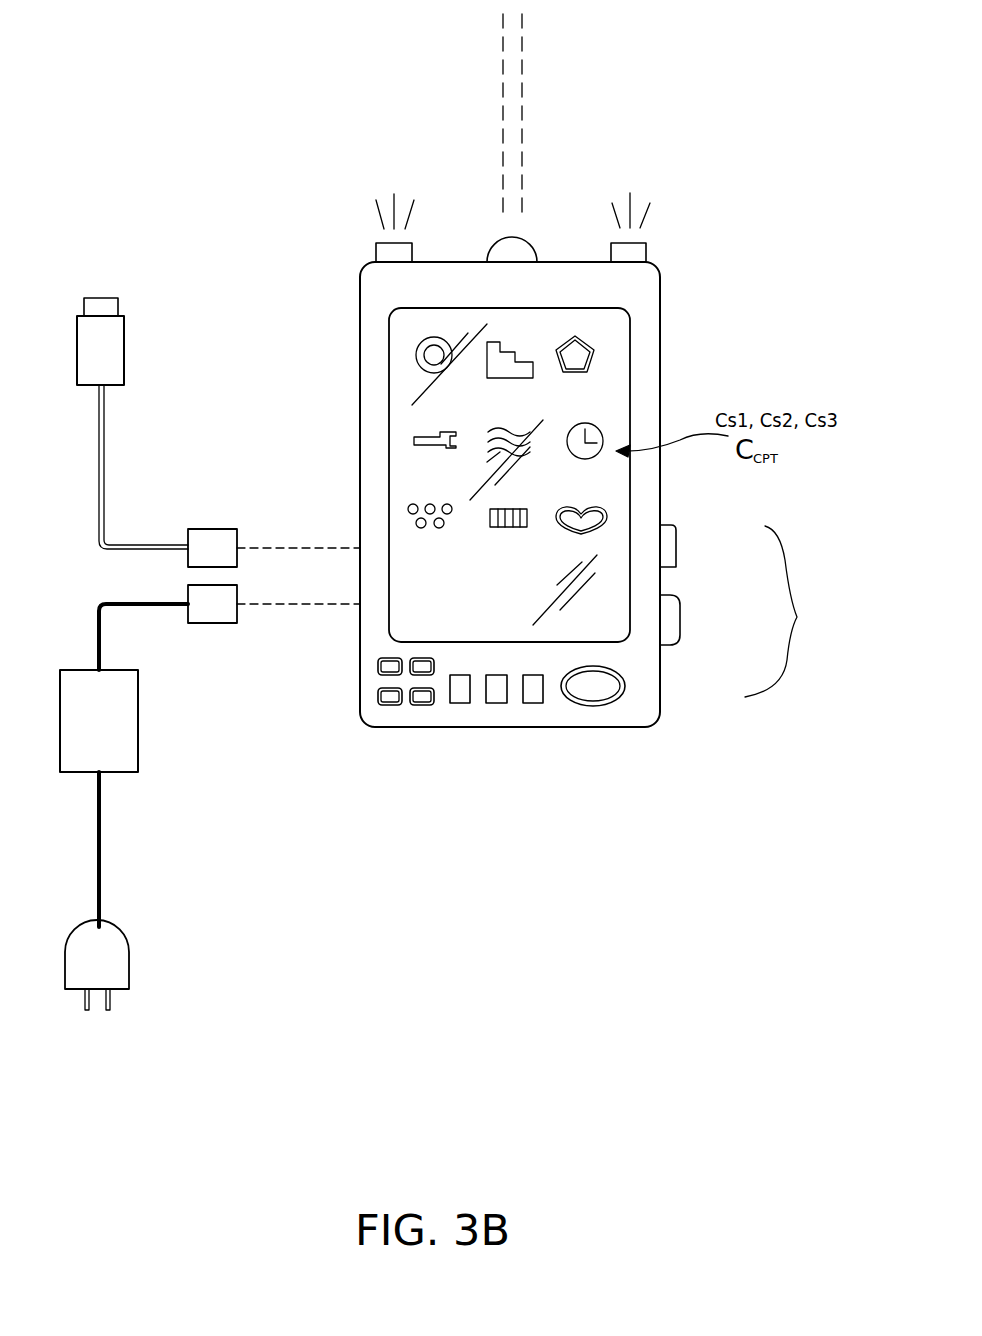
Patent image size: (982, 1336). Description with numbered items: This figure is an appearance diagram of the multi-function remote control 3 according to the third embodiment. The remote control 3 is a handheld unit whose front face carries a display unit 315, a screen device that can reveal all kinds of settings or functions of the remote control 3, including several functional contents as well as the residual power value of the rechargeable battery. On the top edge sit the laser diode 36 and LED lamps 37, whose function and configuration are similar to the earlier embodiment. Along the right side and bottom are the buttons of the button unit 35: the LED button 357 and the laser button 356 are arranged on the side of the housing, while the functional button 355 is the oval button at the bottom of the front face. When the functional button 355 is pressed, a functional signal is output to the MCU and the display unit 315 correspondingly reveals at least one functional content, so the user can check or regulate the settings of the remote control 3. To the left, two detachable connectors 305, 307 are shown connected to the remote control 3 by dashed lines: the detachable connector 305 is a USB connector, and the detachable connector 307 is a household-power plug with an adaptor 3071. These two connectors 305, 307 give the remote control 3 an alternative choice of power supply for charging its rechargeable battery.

The multi-function remote control 3 is at (758, 855).
The button unit 35 is at (787, 611).
The laser diode 36 is at (540, 252).
The LED lamp 37 is at (385, 251).
The detachable connector 305 is at (99, 280).
The detachable connector 307 is at (209, 853).
The adaptor 3071 is at (115, 717).
The display unit 315 is at (613, 343).
The functional button 355 is at (625, 666).
The laser button 356 is at (670, 618).
The LED button 357 is at (668, 543).